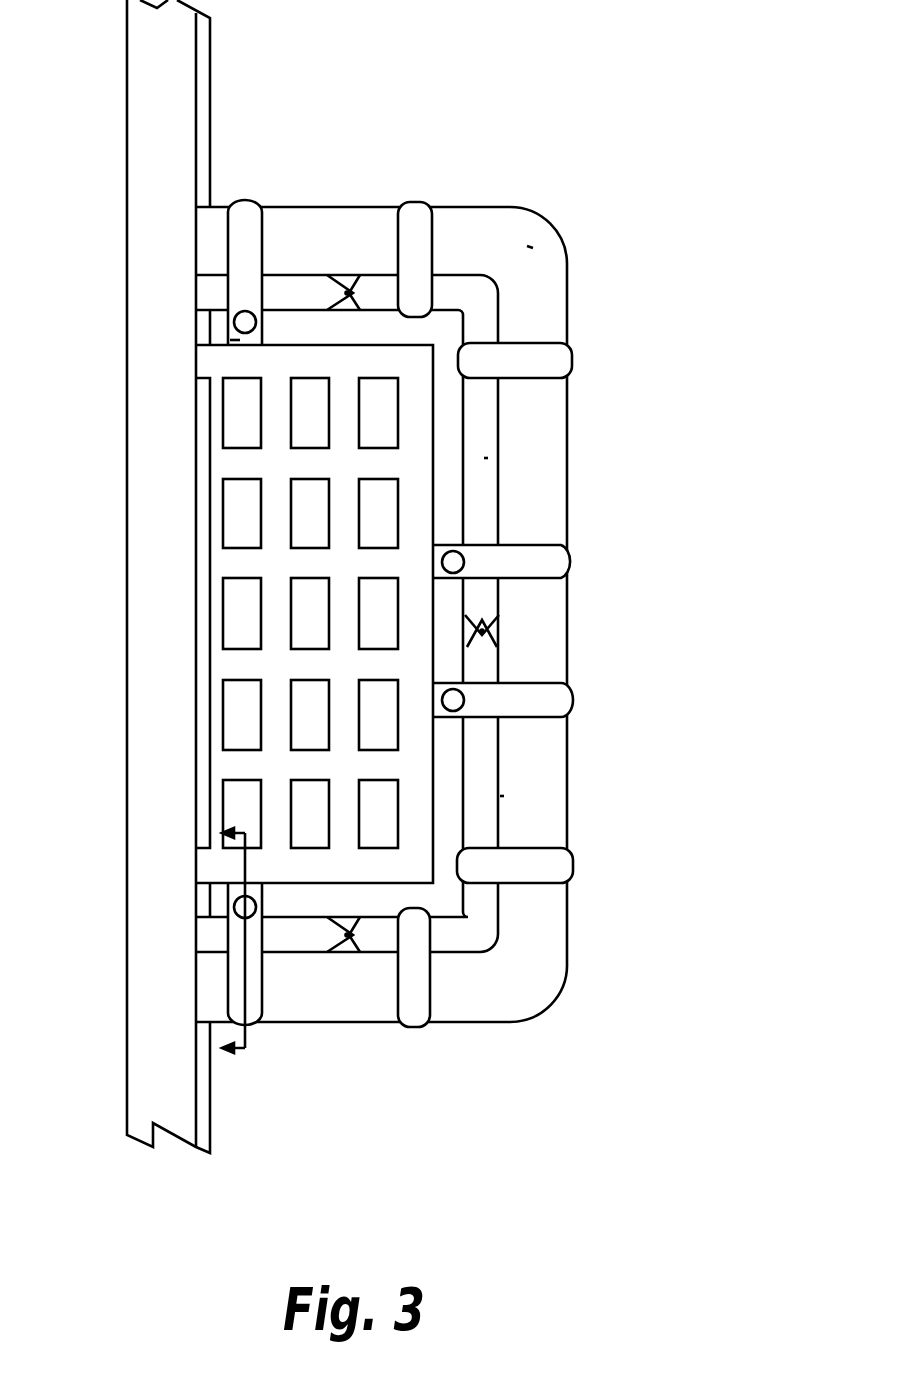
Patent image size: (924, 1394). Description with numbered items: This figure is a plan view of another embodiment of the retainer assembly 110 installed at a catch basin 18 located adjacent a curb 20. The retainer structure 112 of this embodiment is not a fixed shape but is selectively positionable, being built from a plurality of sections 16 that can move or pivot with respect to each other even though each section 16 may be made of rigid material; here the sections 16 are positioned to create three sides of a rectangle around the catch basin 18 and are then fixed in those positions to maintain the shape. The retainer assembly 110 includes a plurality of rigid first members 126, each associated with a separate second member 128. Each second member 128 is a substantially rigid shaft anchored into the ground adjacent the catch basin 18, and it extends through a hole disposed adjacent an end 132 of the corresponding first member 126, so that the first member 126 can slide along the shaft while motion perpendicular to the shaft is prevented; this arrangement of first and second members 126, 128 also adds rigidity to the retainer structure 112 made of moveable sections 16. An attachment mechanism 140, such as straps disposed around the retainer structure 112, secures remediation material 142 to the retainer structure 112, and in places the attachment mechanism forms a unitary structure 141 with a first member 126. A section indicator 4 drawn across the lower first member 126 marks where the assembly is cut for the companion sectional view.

The curb 20 is at (150, 140).
The sections 16 is at (307, 293).
The first members 126 is at (205, 300).
The attachment mechanism 140 is at (415, 202).
The unitary structure 141 is at (243, 203).
The catch basin 18 is at (260, 520).
The second members 128 is at (238, 322).
The end 132 is at (237, 340).
The remediation material 142 is at (527, 250).
The retainer structure 112 is at (486, 458).
The retainer assembly 110 is at (500, 796).
The section line 4- 4 is at (236, 943).